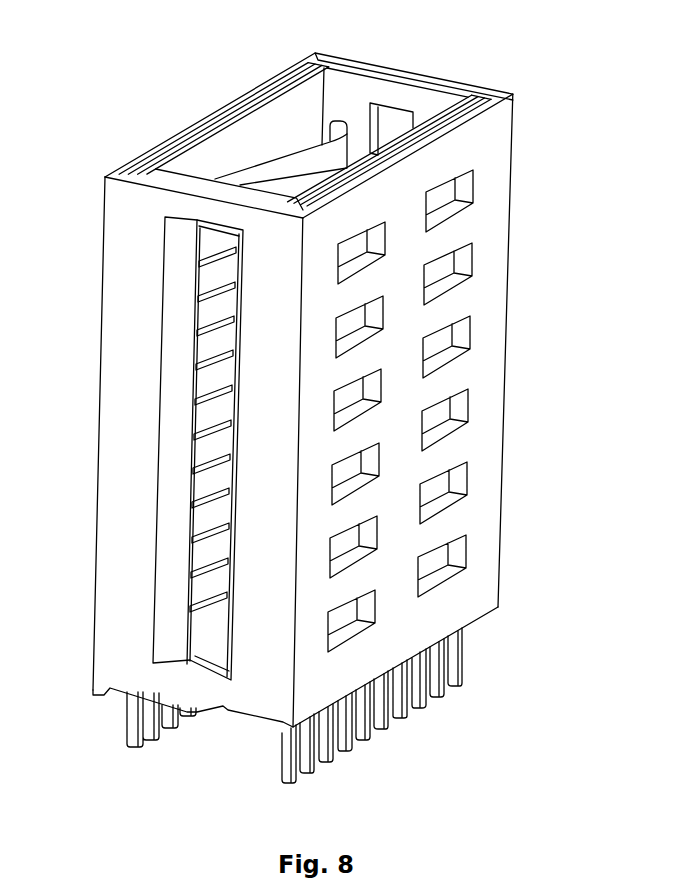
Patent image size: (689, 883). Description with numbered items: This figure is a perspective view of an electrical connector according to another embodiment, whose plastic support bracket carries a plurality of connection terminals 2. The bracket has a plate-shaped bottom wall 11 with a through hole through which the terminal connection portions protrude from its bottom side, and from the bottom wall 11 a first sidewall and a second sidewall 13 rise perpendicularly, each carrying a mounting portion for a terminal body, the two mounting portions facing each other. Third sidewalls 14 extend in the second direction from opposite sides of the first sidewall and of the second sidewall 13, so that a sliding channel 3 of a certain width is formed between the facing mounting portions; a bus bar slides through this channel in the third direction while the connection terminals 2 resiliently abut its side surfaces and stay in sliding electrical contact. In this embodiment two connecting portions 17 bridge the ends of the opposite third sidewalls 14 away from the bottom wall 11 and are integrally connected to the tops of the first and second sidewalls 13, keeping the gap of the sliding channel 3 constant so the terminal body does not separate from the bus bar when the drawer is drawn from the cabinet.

The connection terminal 2 is at (283, 158).
The sliding channel 3 is at (390, 123).
The bottom wall 11 is at (193, 690).
The second sidewall 13 is at (447, 161).
The third sidewall 14 is at (137, 297).
The connecting portion 17 is at (200, 197).